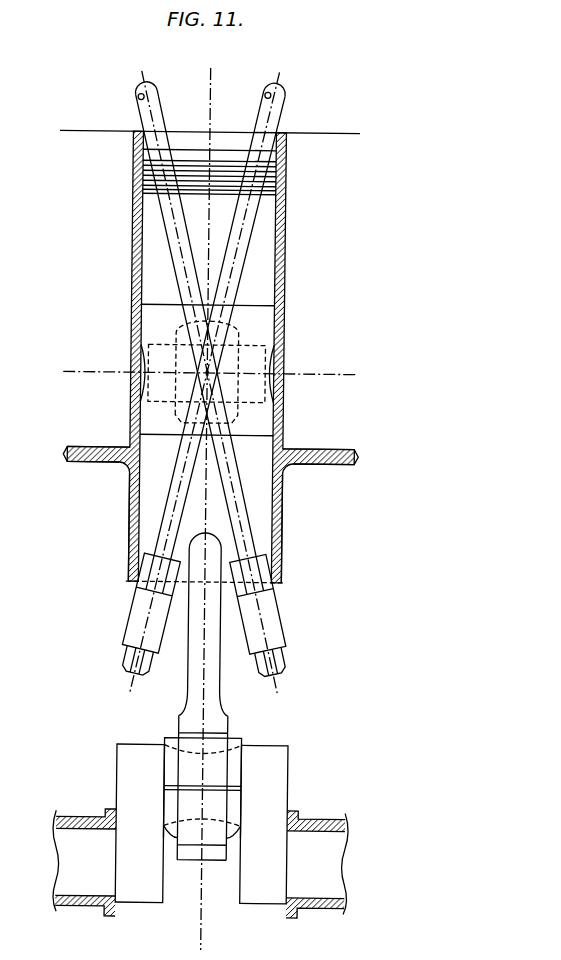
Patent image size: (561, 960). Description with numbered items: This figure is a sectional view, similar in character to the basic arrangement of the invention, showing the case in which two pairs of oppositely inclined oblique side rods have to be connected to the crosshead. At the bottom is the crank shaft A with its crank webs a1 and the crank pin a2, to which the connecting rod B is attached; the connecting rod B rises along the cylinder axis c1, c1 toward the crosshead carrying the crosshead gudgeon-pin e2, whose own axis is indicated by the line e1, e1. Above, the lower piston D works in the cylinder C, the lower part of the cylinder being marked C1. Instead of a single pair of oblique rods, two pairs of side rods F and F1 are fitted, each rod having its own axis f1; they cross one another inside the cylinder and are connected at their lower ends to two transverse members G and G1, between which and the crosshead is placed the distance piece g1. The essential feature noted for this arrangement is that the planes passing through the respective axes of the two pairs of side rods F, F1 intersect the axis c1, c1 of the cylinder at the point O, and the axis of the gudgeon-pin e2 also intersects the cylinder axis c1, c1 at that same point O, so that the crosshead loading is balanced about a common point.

The axis of the cylinder c1 is at (207, 502).
The cylinder C is at (130, 293).
The lower cylinder portion C1 is at (130, 490).
The distance piece g1 is at (255, 488).
The lower piston D is at (257, 283).
The crosshead gudgeon-pin e2 is at (262, 403).
The wrist pin axis e1 is at (196, 374).
The point of intersection O is at (204, 374).
The connecting rod B is at (238, 333).
The second pair of side rods F1 is at (168, 226).
The oblique rods F is at (250, 227).
The guide rod axis f1 is at (137, 80).
The second transverse member G1 is at (276, 631).
The transverse member G is at (136, 622).
The crank pins a2 is at (216, 750).
The crank webs a1 is at (125, 774).
The crank shaft A is at (62, 858).